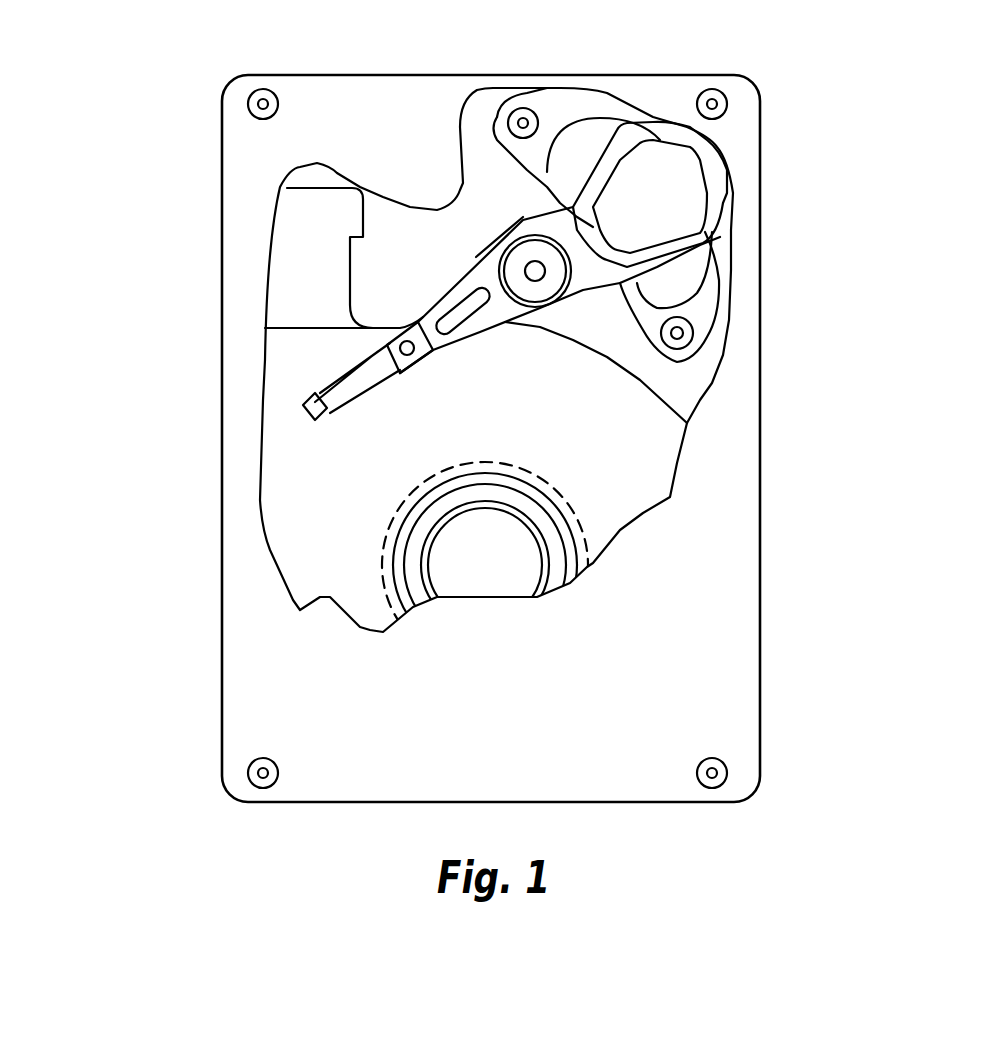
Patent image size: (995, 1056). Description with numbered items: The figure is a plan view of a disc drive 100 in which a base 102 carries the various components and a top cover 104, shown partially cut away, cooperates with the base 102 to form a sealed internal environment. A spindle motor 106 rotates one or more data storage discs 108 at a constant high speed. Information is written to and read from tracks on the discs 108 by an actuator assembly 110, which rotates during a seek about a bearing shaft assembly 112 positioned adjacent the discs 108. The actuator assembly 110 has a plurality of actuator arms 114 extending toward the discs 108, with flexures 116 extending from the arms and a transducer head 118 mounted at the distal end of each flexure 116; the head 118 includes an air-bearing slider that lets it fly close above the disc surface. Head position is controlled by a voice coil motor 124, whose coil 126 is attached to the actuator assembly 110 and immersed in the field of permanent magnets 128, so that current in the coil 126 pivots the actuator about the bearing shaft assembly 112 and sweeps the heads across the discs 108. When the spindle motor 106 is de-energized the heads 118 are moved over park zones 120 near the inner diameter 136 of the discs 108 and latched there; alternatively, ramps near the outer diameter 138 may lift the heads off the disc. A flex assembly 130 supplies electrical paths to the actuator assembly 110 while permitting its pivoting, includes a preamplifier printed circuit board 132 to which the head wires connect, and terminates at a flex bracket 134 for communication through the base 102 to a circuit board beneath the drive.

The disc drive 100 is at (200, 68).
The base 102 is at (280, 347).
The top cover 104 is at (280, 678).
The spindle motor 106 is at (483, 567).
The data storage disc 108 is at (627, 497).
The actuator assembly 110 is at (500, 313).
The bearing shaft assembly 112 is at (537, 272).
The actuator arm 114 is at (470, 337).
The flexure 116 is at (343, 392).
The transducer head 118 is at (307, 413).
The park zone 120 is at (383, 568).
The voice coil motor 124 is at (587, 85).
The coil 126 is at (713, 198).
The permanent magnet 128 is at (560, 153).
The flex assembly 130 is at (450, 275).
The preamplifier printed circuit board 132 is at (490, 207).
The flex bracket 134 is at (300, 250).
The inner diameter 136 is at (573, 550).
The outer diameter 138 is at (680, 397).